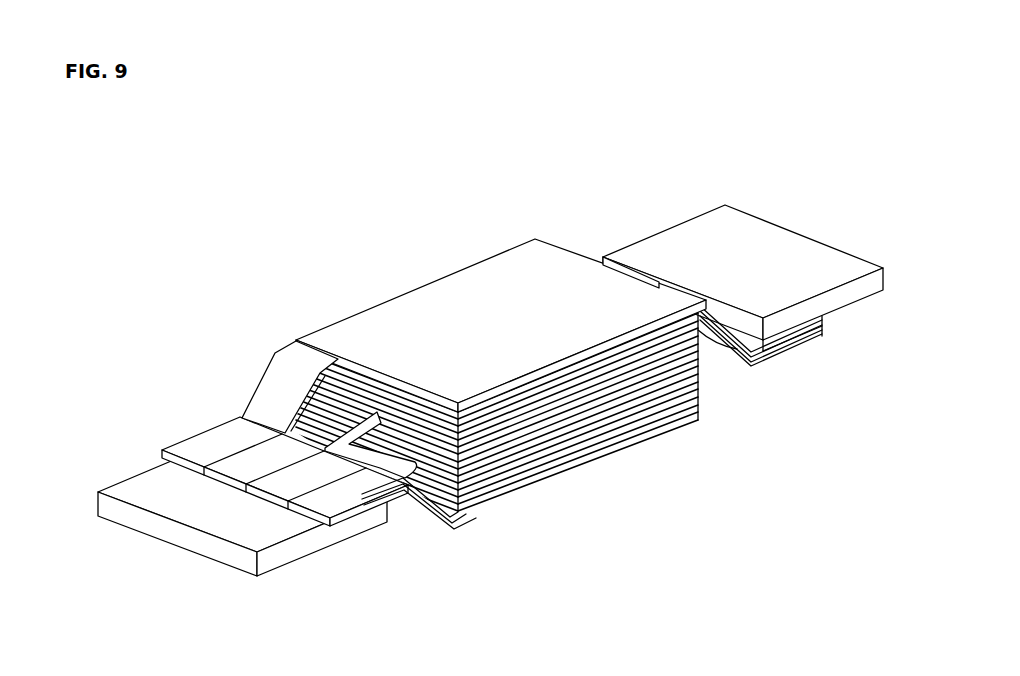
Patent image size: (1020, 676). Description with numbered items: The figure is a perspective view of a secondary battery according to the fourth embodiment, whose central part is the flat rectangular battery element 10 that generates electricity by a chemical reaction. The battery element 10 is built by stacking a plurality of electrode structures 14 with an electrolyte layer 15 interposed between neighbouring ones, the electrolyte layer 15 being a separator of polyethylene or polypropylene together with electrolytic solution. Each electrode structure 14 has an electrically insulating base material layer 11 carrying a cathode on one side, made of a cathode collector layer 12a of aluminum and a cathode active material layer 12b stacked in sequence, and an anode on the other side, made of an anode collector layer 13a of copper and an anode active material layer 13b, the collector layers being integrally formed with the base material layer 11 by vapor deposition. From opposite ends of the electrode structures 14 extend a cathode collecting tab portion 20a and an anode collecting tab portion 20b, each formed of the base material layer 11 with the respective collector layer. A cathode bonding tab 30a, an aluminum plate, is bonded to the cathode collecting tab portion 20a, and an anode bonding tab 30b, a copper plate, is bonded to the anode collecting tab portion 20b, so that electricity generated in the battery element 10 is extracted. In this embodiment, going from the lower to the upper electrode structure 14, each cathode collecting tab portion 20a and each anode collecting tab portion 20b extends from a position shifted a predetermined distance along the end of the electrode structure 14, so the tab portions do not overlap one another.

The battery element 10 is at (412, 286).
The base material layer 11 is at (570, 432).
The cathode collector layer 12a is at (543, 447).
The cathode active material layer 12b is at (517, 465).
The anode collector layer 13a is at (602, 415).
The anode active material layer 13b is at (633, 395).
The electrode structure 14 is at (737, 451).
The electrolyte layer 15 is at (492, 478).
The cathode collecting tab portion 20a is at (250, 389).
The anode collecting tab portion 20b is at (777, 358).
The cathode bonding tab 30a is at (307, 547).
The anode bonding tab 30b is at (679, 238).